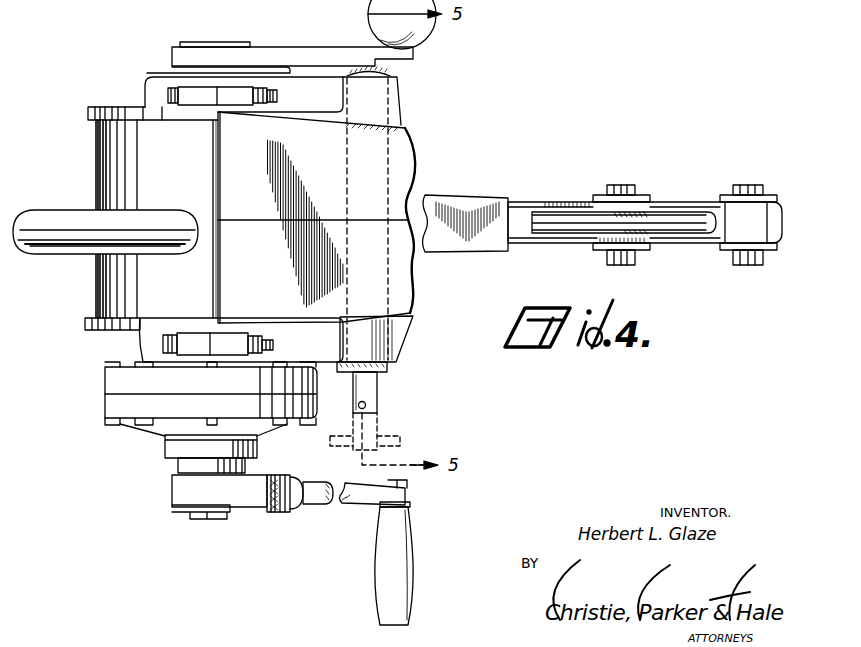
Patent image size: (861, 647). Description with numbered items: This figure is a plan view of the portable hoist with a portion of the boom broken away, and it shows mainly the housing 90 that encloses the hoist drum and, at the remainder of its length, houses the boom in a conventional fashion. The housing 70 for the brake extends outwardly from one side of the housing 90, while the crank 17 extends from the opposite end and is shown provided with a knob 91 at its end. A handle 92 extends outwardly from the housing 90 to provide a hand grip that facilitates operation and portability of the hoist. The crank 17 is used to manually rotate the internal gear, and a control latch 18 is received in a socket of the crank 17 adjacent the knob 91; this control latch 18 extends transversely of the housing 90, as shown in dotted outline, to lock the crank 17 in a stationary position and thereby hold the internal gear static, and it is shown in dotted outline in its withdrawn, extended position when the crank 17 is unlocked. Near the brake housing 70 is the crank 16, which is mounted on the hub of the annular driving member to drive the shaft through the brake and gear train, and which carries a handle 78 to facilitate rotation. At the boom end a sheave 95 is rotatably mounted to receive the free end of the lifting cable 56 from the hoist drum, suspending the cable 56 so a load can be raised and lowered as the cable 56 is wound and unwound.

The crank 16 is at (360, 497).
The crank 17 is at (300, 52).
The control latch 18 is at (368, 392).
The lifting cable 56 is at (697, 223).
The housing 70 is at (220, 392).
The handle 78 is at (396, 567).
The housing 90 is at (334, 166).
The knob 91 is at (435, 37).
The handle 92 is at (55, 218).
The sheave 95 is at (560, 207).